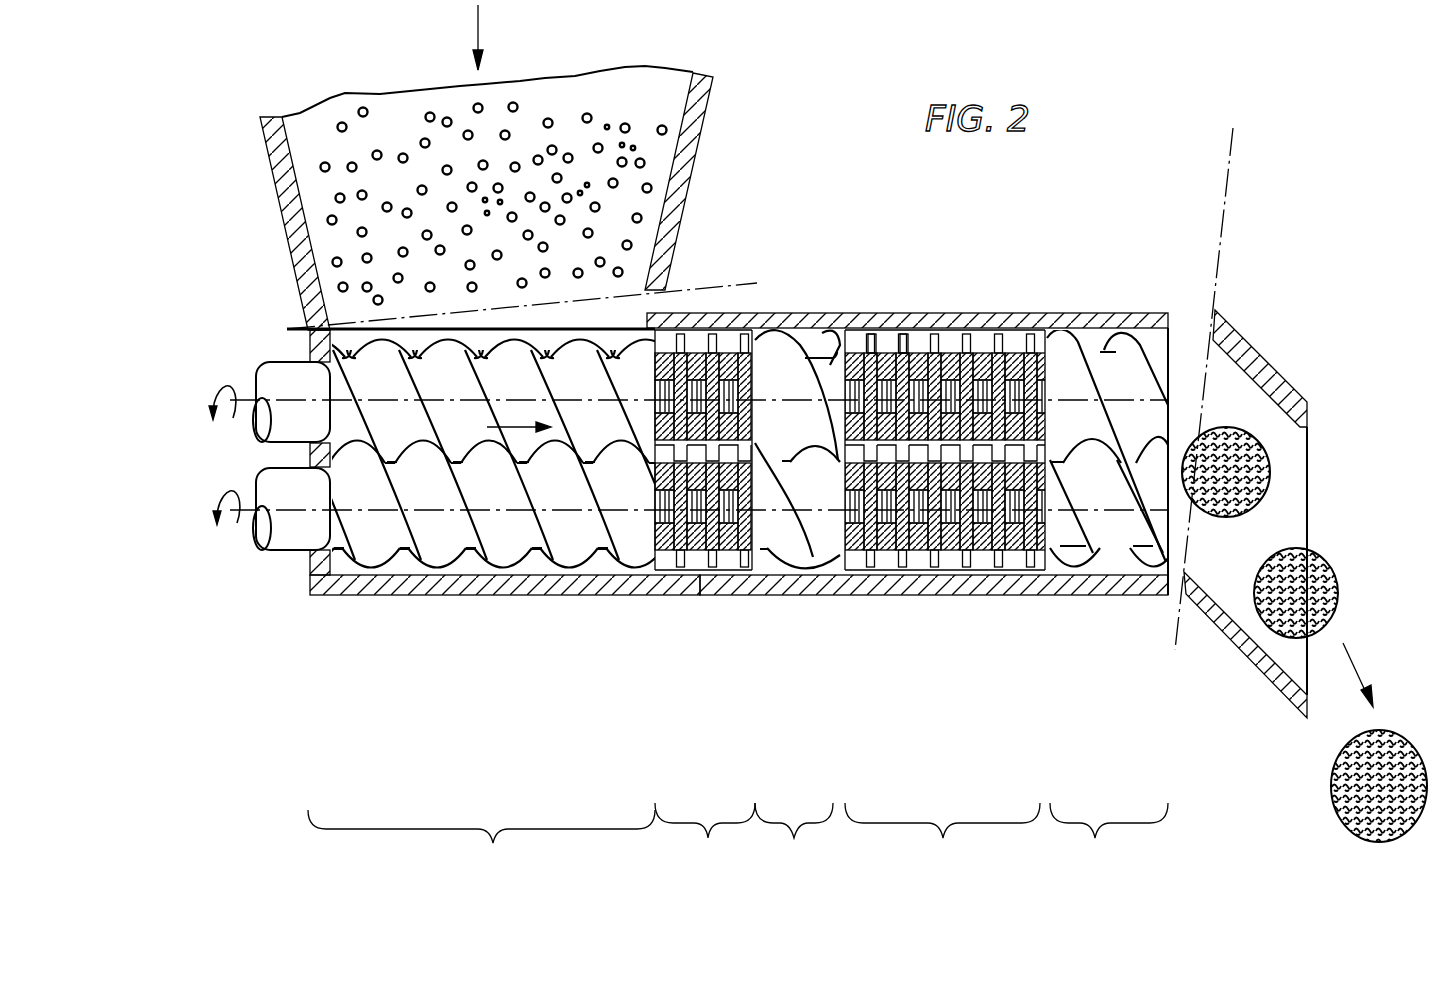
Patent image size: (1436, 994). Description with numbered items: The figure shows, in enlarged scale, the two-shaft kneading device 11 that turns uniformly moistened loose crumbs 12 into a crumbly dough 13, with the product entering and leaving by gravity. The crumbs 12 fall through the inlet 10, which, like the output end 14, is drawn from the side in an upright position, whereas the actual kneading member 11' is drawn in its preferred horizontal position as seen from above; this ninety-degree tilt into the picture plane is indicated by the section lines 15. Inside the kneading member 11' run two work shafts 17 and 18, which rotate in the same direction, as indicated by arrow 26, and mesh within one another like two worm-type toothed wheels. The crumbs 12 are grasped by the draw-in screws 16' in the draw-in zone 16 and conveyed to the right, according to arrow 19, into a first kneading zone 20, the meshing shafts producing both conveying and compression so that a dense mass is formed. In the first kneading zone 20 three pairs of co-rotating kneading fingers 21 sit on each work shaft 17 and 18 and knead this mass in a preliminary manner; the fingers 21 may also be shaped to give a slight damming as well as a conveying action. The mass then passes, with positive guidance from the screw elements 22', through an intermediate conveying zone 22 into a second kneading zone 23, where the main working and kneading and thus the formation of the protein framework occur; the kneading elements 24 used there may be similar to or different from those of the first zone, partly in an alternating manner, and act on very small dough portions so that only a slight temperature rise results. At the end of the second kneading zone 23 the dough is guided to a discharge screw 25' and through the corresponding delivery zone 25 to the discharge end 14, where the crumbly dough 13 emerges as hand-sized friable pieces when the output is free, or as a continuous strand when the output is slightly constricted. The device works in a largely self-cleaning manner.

The inlet 10 is at (697, 173).
The loose crumbs 12 is at (384, 124).
The section lines 15 is at (716, 287).
The work shaft 17 is at (267, 372).
The work shaft 18 is at (293, 538).
The arrow 26 is at (213, 505).
The draw-in screws 16' is at (470, 494).
The arrow 19 is at (503, 430).
The kneading member 11' is at (505, 611).
The kneading device 11 is at (727, 480).
The kneading fingers 21 is at (760, 328).
The screw elements 22' is at (844, 322).
The kneading discs 24 is at (902, 332).
The discharge screw 25' is at (1101, 420).
The output end 14 is at (1173, 420).
The crumbly dough 13 is at (1318, 573).
The draw-in zone 16 is at (481, 843).
The first kneading zone 20 is at (705, 603).
The intermediate conveying zone 22 is at (794, 840).
The second kneading zone 23 is at (957, 603).
The delivery zone 25 is at (1109, 840).